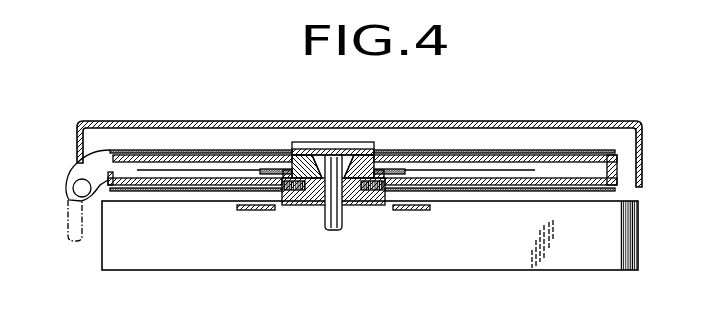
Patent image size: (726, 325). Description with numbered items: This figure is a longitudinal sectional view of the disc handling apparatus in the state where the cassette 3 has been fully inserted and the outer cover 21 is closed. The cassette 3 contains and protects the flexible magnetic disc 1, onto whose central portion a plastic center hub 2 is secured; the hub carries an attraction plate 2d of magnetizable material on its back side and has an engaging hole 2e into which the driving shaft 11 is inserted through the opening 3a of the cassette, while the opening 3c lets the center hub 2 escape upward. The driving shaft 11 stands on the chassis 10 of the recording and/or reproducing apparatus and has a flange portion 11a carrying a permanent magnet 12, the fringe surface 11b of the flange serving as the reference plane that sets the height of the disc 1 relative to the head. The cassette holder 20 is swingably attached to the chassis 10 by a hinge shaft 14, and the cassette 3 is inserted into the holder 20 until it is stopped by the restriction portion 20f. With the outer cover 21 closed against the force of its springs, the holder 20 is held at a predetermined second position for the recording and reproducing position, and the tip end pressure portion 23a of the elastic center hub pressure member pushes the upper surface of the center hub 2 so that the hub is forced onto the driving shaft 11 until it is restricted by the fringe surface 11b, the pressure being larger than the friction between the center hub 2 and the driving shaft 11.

The flexible magnetic disc 1 is at (495, 165).
The center hub 2 is at (367, 145).
The attraction plate 2d is at (398, 195).
The engaging hole 2e is at (310, 153).
The cassette 3 is at (618, 165).
The opening 3a is at (258, 210).
The opening 3c is at (283, 160).
The chassis 10 is at (577, 262).
The driving shaft 11 is at (312, 207).
The flange portion 11a is at (352, 203).
The fringe surface 11b is at (364, 197).
The permanent magnet 12 is at (295, 203).
The hinge shaft 14 is at (78, 190).
The cassette holder 20 is at (552, 150).
The restriction portion 20f is at (100, 198).
The outer cover 21 is at (533, 122).
The tip end pressure portion 23a is at (340, 150).